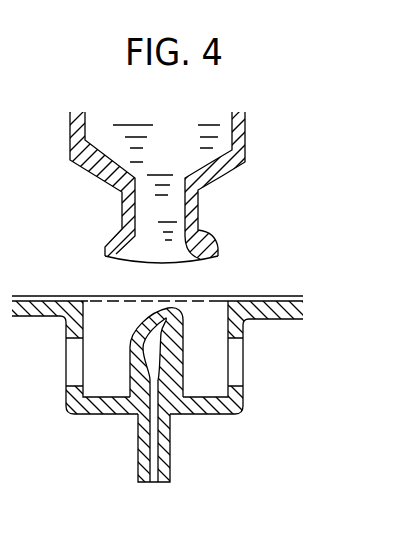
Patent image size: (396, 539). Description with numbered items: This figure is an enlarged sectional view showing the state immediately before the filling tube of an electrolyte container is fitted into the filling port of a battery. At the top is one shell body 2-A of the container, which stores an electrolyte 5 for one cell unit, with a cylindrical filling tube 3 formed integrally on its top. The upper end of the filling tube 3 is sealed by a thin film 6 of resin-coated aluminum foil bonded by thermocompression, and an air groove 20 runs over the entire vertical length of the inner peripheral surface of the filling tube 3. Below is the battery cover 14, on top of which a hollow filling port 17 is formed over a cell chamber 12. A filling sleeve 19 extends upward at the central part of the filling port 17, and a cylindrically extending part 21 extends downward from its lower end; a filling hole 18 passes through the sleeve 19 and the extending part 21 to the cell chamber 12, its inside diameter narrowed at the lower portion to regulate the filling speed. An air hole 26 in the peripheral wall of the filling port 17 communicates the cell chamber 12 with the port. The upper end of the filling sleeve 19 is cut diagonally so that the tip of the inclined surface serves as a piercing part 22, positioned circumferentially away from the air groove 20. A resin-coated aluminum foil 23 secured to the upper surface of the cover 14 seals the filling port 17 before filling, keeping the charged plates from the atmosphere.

The shell body 2-A is at (233, 132).
The filling tube 3 is at (122, 212).
The electrolyte 5 is at (167, 125).
The thin film 6 is at (182, 263).
The cell chamber 12 is at (155, 505).
The cover 14 is at (26, 304).
The filling port 17 is at (209, 332).
The filling hole 18 is at (155, 405).
The filling sleeve 19 is at (165, 378).
The air groove 20 is at (183, 213).
The cylindrically extending part 21 is at (143, 468).
The piercing part 22 is at (164, 317).
The aluminum foil 23 is at (92, 296).
The air hole 26 is at (131, 367).